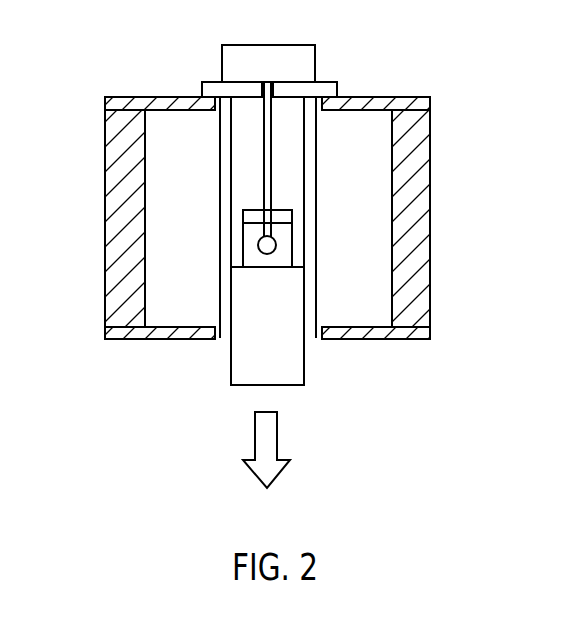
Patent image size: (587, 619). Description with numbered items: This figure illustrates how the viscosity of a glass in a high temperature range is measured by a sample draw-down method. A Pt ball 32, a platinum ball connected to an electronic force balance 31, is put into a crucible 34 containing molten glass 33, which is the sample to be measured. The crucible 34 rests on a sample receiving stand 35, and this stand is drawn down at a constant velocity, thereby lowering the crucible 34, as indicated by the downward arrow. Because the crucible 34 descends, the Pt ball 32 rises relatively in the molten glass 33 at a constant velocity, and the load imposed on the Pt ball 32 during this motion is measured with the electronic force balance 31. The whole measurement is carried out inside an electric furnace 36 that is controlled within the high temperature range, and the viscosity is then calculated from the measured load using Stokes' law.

The electronic force balance 31 is at (277, 52).
The Pt ball 32 is at (258, 246).
The molten glass 33 is at (292, 252).
The crucible 34 is at (292, 209).
The sample receiving stand 35 is at (295, 372).
The electric furnace 36 is at (412, 300).